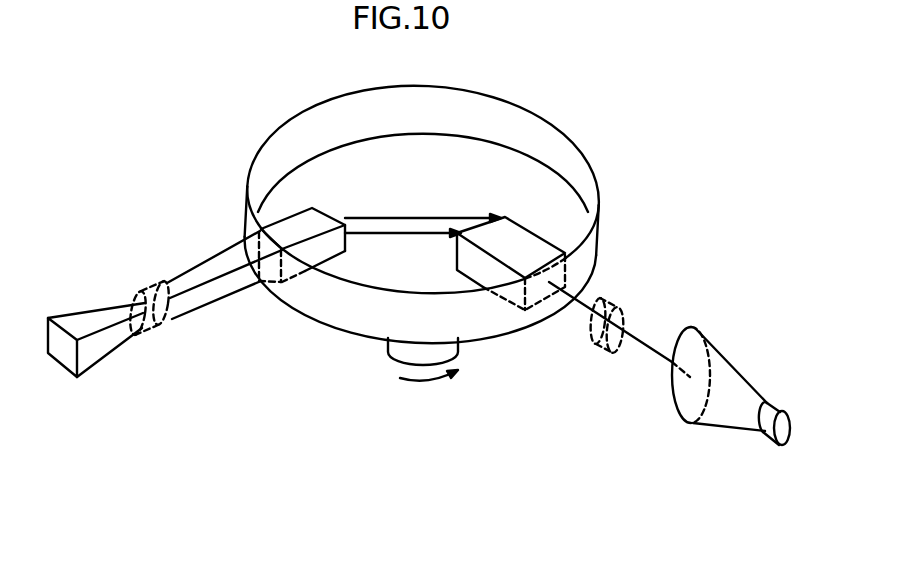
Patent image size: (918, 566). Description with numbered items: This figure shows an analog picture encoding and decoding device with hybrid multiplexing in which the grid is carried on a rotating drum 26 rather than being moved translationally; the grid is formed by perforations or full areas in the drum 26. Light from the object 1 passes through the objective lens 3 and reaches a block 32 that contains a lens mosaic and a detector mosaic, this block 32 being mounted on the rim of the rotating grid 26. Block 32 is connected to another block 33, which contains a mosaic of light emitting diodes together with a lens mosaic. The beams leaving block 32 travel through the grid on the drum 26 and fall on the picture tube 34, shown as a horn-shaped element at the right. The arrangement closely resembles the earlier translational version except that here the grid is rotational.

The object 1 is at (63, 355).
The objective lens 3 is at (158, 326).
The rotating drum 26 is at (504, 315).
The block 32 is at (310, 226).
The block 33 is at (517, 243).
The picture tube 34 is at (694, 348).